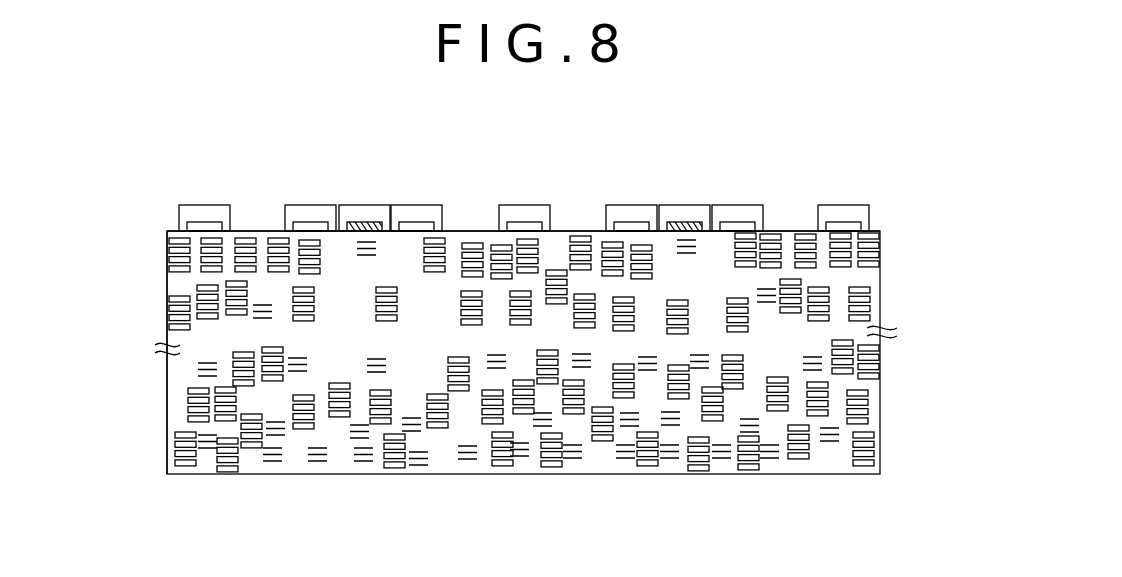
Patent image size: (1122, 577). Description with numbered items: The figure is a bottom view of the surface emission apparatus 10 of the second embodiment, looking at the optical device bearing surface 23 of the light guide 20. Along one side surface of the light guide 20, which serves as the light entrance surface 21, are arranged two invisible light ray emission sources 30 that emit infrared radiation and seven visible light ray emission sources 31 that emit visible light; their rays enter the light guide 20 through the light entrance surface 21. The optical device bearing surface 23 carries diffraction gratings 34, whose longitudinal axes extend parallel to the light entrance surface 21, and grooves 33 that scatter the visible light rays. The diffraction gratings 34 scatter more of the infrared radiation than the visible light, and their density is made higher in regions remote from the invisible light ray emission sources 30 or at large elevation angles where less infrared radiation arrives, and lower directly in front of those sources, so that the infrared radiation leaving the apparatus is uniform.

The surface emission apparatus 10 is at (518, 559).
The light guide 20 is at (888, 396).
The light entrance surface 21 is at (875, 231).
The optical device bearing surface 23 is at (178, 388).
The invisible light ray emission source 30 is at (682, 203).
The visible light ray emission source 31 is at (843, 203).
The groove 33 is at (768, 458).
The diffraction grating 34 is at (866, 306).